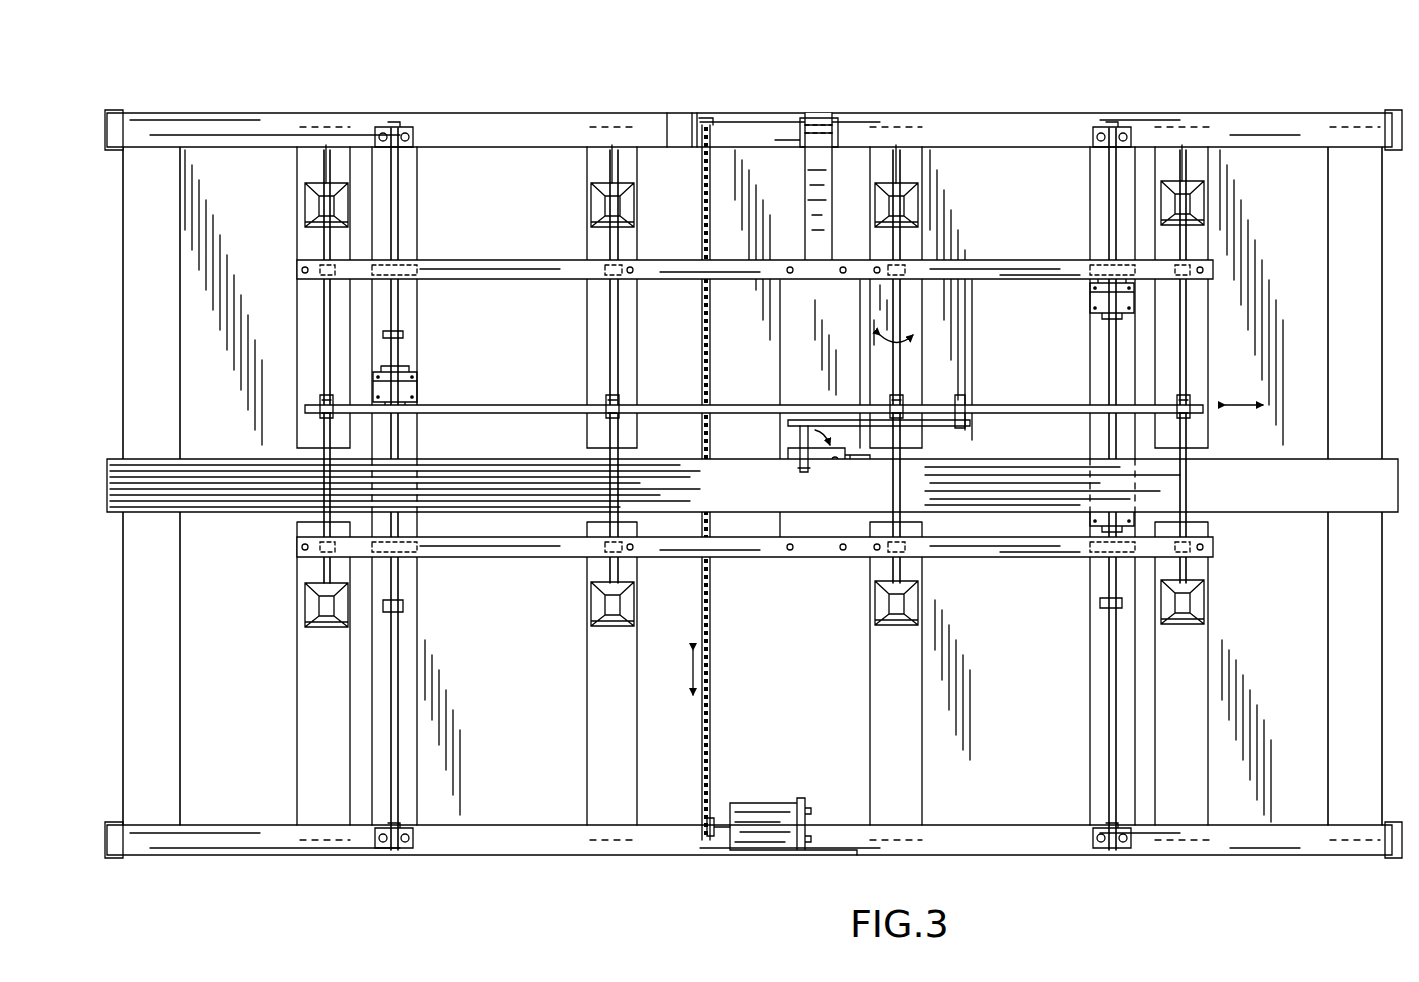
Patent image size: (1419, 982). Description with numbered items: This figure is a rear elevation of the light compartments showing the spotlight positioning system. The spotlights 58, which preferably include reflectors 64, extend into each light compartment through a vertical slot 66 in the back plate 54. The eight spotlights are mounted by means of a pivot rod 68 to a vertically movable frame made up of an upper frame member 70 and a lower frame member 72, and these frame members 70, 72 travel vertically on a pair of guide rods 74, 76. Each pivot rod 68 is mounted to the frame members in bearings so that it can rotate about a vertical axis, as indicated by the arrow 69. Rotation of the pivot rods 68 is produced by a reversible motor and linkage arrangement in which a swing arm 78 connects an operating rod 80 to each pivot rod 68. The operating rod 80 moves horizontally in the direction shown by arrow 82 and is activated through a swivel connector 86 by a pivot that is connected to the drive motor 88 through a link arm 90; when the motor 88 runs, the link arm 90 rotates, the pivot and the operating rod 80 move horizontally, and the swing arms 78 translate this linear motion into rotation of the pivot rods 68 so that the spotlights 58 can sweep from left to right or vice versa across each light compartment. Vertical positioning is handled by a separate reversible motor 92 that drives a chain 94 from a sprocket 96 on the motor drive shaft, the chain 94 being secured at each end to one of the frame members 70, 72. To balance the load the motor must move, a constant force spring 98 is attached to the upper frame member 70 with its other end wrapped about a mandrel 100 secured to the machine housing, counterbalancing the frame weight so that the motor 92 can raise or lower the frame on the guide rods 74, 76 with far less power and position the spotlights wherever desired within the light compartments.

The back plate 54 is at (502, 165).
The spotlight 58 is at (327, 198).
The reflector 64 is at (310, 208).
The vertical slot 66 is at (294, 301).
The pivot rod 68 is at (1190, 300).
The arrow 69 is at (900, 343).
The upper frame member 70 is at (1033, 262).
The lower frame member 72 is at (1045, 559).
The guide rod 74 is at (1108, 700).
The guide rod 76 is at (397, 690).
The swing arm 78 is at (605, 397).
The operating rod 80 is at (1053, 404).
The arrow 82 is at (1242, 407).
The swivel connector 86 is at (968, 405).
The drive motor 88 is at (825, 480).
The link arm 90 is at (800, 440).
The reversible motor 92 is at (768, 836).
The chain 94 is at (700, 720).
The sprocket 96 is at (712, 838).
The constant force spring 98 is at (805, 182).
The mandrel 100 is at (838, 142).